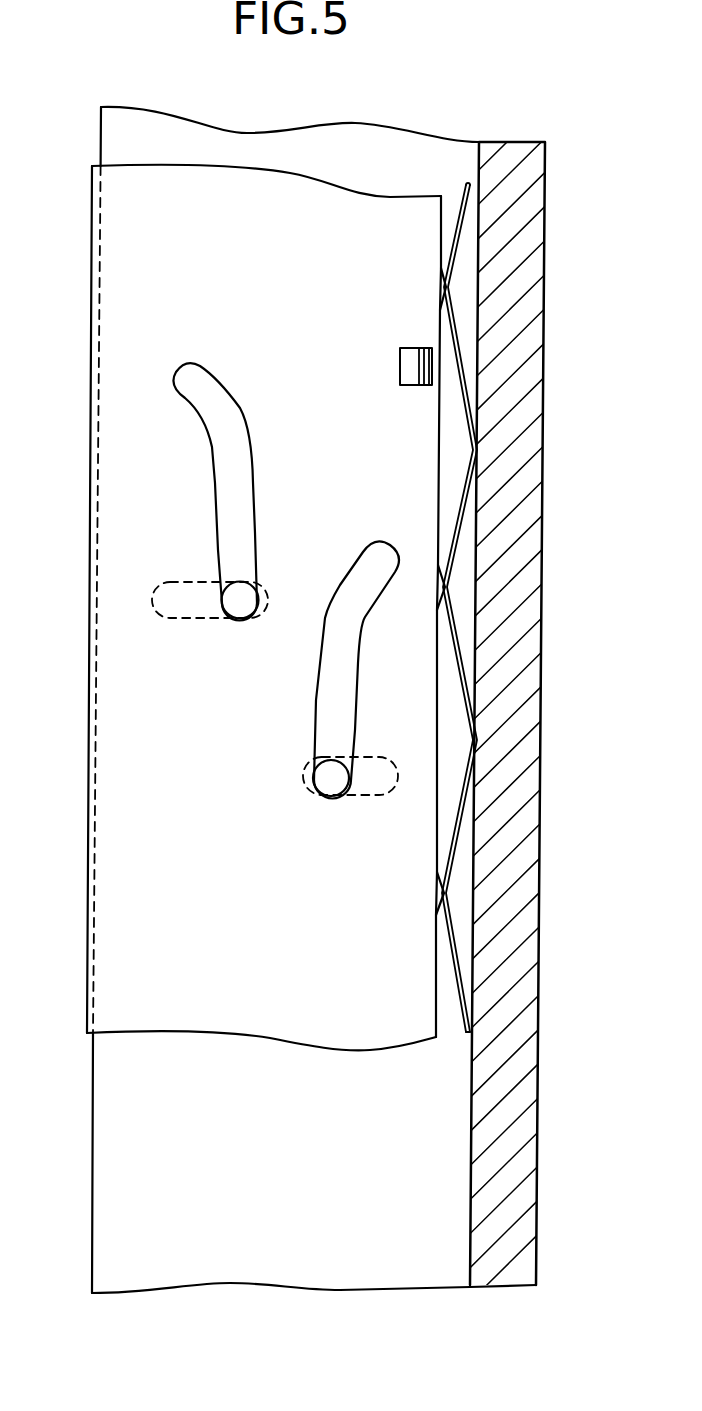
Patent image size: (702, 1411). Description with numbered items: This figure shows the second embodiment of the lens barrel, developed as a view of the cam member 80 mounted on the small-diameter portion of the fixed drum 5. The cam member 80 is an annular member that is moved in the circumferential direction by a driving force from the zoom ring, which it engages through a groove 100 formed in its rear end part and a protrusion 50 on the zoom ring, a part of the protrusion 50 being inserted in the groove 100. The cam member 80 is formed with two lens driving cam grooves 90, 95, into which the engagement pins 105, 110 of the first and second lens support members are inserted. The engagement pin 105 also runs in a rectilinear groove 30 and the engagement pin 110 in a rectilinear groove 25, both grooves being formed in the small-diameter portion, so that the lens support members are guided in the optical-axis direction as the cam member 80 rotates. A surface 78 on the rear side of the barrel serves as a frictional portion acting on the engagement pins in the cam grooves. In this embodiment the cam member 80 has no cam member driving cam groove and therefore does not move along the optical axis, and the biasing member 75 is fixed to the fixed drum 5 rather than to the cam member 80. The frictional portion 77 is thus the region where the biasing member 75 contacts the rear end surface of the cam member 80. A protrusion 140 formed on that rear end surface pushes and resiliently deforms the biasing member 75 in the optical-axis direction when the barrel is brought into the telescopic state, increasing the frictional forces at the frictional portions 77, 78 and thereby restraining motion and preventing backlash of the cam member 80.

The fixed drum 5 is at (115, 1143).
The cam member 80 is at (135, 383).
The cam groove 90 is at (210, 390).
The cam groove 95 is at (328, 710).
The surface 78 is at (293, 580).
The engagement pin 105 is at (245, 602).
The engagement pin 110 is at (332, 782).
The rectilinear groove 30 is at (173, 580).
The rectilinear groove 25 is at (368, 797).
The groove 100 is at (400, 368).
The protrusion 50 is at (418, 386).
The frictional portion 77 is at (447, 287).
The protrusion 140 is at (447, 287).
The biasing member 75 is at (470, 1032).